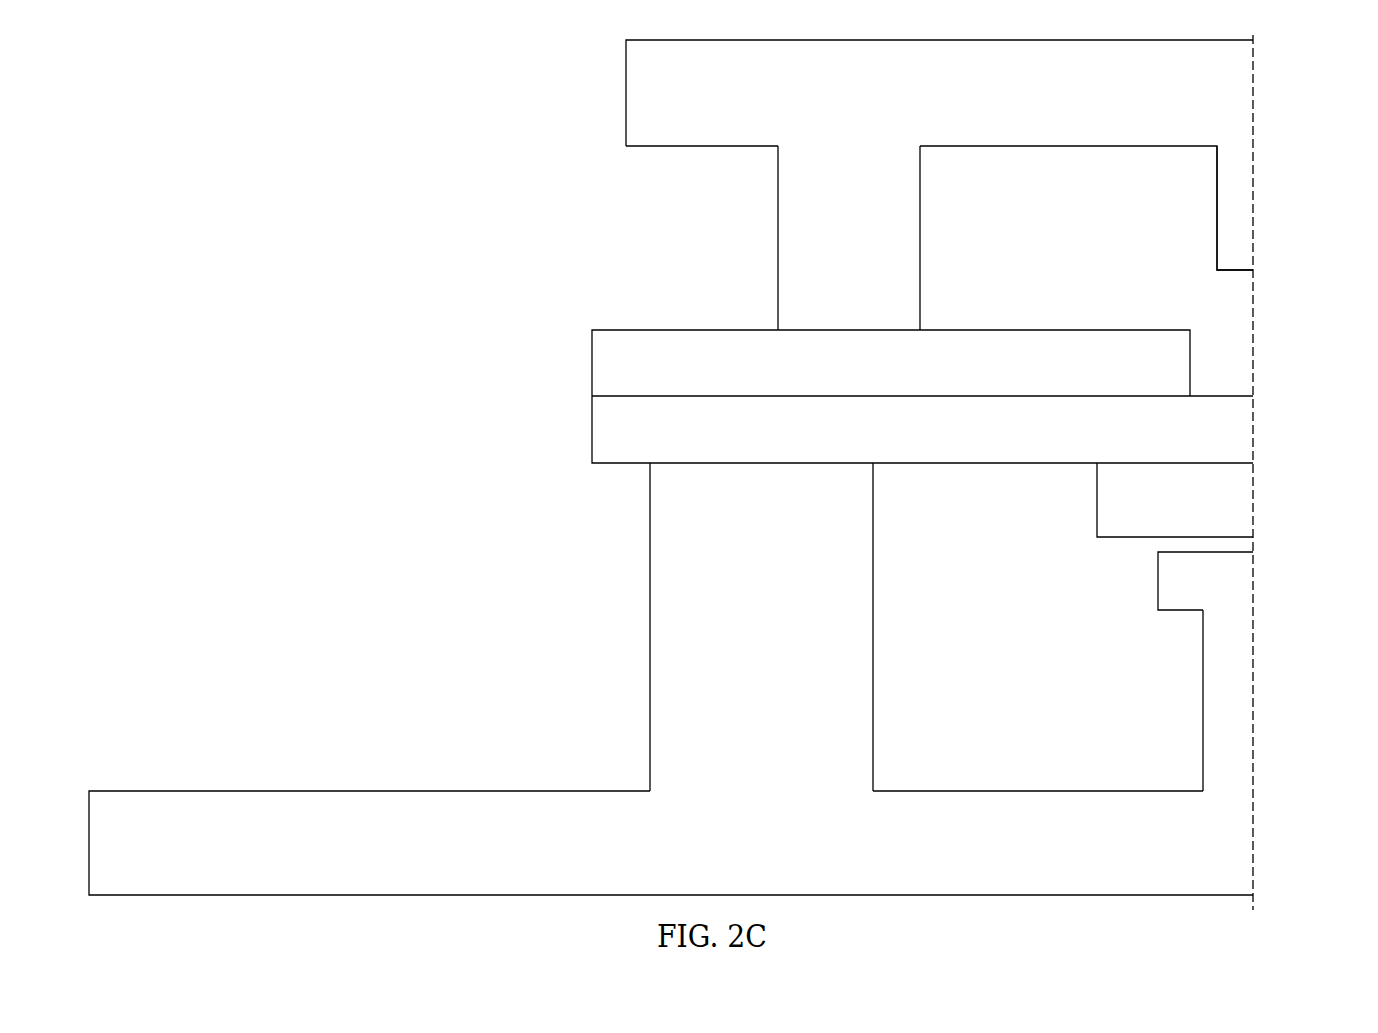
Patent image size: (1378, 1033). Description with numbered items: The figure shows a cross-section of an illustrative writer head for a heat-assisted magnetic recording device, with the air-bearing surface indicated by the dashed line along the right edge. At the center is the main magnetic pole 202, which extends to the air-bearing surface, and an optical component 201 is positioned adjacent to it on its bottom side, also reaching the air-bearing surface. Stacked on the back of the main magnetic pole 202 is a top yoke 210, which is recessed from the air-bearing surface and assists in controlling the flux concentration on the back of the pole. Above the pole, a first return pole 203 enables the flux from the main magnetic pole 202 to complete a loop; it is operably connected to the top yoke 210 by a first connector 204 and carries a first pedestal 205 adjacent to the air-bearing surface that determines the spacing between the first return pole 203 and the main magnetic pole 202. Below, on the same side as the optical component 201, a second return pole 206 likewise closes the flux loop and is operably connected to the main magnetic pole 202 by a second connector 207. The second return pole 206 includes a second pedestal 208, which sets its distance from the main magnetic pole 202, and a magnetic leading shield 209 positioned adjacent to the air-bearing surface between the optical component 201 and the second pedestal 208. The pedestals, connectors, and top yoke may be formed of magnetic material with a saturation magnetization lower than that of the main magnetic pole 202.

The optical component 201 is at (1253, 493).
The main magnetic pole 202 is at (1253, 423).
The first return pole 203 is at (1253, 90).
The first connector 204 is at (778, 240).
The first pedestal 205 is at (1253, 190).
The second return pole 206 is at (200, 790).
The second connector 207 is at (650, 630).
The second pedestal 208 is at (1253, 722).
The magnetic leading shield 209 is at (1253, 575).
The top yoke 210 is at (592, 358).